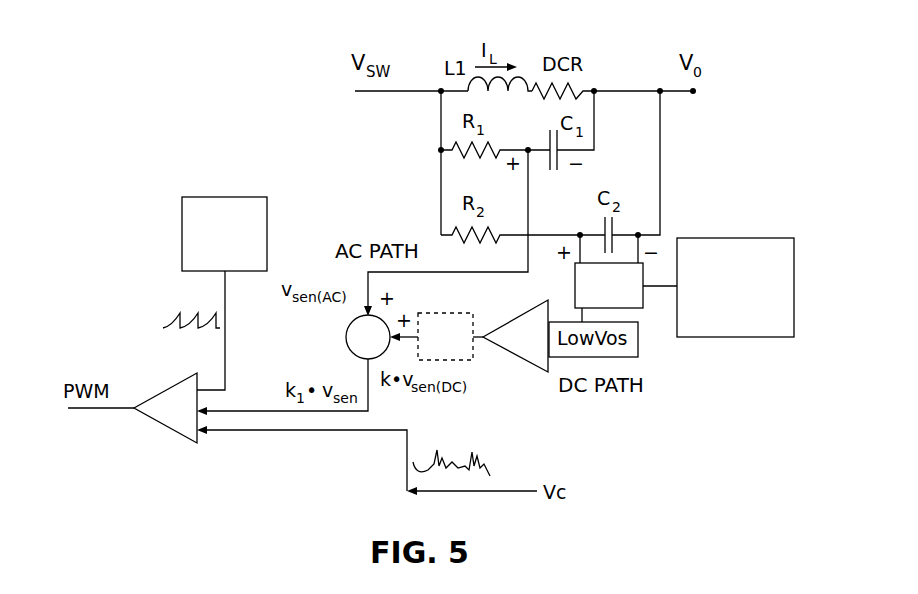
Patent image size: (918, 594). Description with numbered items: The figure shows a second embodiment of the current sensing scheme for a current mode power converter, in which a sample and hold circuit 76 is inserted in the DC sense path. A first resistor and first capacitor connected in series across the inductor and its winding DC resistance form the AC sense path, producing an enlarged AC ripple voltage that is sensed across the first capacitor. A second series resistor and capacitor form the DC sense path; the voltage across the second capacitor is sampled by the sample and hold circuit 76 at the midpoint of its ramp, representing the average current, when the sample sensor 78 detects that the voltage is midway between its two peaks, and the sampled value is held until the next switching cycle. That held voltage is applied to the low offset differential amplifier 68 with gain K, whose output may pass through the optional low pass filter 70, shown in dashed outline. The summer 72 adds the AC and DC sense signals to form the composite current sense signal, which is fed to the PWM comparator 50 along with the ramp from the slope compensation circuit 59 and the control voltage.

The PWM comparator 50 is at (172, 432).
The slope compensation circuit 59 is at (182, 240).
The low offset voltage differential amplifier 68 is at (527, 363).
The low pass filter 70 is at (458, 313).
The summer 72 is at (346, 337).
The sample and hold circuit 76 is at (573, 293).
The sample sensor 78 is at (755, 337).